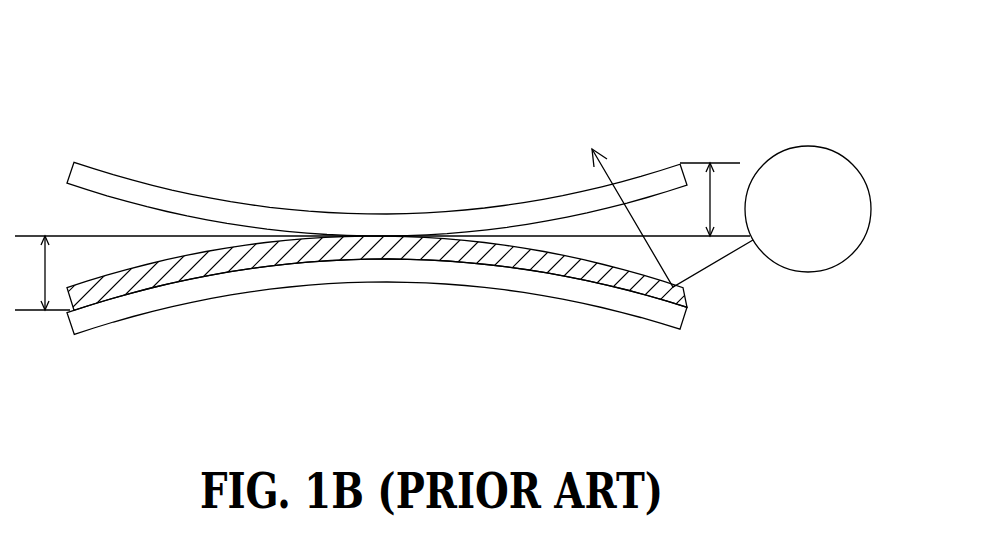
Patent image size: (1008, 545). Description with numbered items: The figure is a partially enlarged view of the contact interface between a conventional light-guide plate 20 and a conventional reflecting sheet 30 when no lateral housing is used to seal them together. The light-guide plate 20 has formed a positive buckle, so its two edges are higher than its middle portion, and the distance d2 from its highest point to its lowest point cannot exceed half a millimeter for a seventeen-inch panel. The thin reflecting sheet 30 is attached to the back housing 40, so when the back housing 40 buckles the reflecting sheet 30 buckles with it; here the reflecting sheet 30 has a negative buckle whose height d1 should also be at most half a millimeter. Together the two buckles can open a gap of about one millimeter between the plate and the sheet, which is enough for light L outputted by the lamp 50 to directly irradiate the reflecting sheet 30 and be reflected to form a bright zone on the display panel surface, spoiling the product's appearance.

The light-guide plate 20 is at (124, 180).
The reflecting sheet 30 is at (124, 297).
The back housing 40 is at (377, 282).
The lamp 50 is at (808, 147).
The light L is at (668, 197).
The distance from the highest point to the lowest point of the reflecting sheet d1 is at (42, 273).
The distance from the highest point to the lowest point of the light-guide plate d2 is at (710, 199).